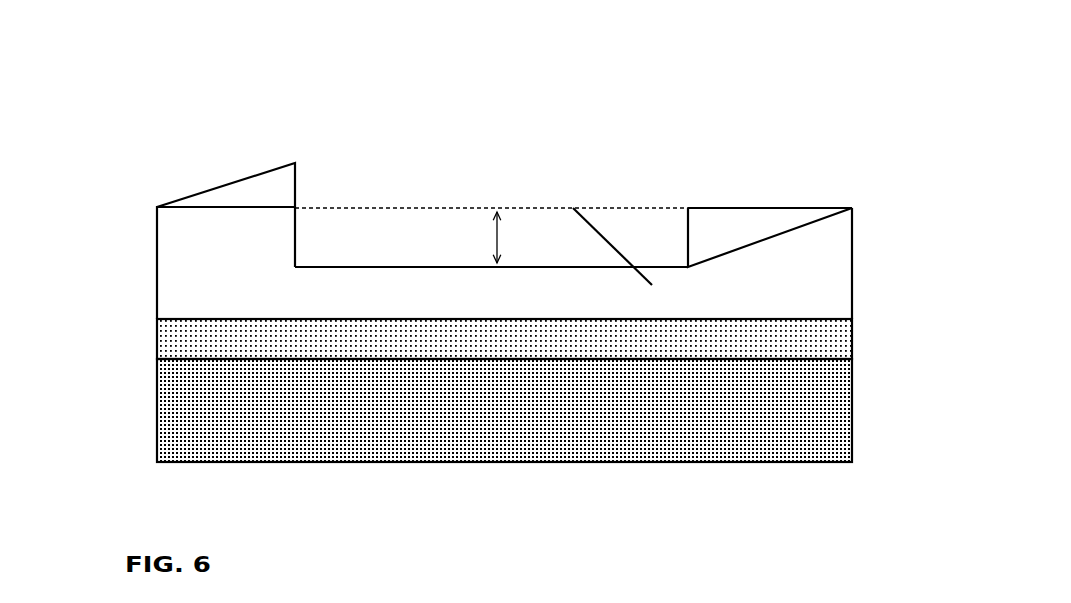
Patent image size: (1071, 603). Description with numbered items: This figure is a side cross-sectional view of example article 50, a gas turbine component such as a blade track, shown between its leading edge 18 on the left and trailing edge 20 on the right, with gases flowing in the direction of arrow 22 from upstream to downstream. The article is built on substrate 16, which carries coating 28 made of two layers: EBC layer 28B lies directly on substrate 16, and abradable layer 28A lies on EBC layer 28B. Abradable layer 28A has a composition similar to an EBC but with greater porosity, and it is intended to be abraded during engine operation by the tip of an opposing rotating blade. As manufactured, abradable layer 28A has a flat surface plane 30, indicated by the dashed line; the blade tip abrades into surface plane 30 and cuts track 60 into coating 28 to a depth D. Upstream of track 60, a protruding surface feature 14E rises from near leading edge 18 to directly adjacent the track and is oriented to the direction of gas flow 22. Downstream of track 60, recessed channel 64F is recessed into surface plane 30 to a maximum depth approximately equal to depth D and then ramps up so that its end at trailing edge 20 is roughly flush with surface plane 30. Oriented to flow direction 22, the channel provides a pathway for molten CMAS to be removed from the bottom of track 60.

The substrate 16 is at (504, 410).
The coating 28 is at (868, 212).
The abradable layer 28A is at (504, 263).
The EBC layer 28B is at (504, 339).
The protruding surface feature 14E is at (262, 180).
The recessed channel 64F is at (738, 225).
The surface plane 30 is at (620, 258).
The track 60 is at (445, 232).
The depth D is at (510, 237).
The leading edge 18 is at (132, 173).
The trailing edge 20 is at (888, 173).
The direction of gas flow 22 is at (535, 128).
The article 50 is at (721, 101).